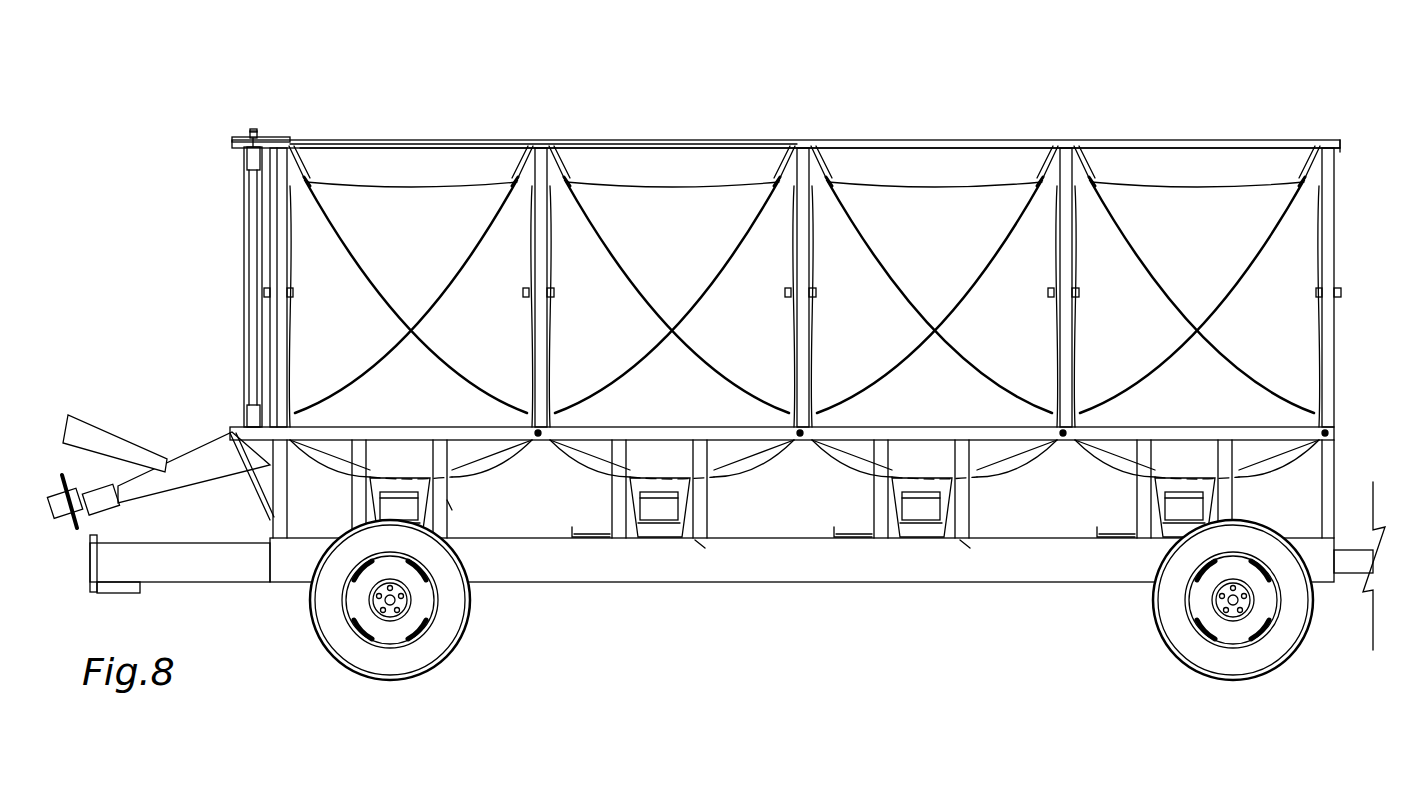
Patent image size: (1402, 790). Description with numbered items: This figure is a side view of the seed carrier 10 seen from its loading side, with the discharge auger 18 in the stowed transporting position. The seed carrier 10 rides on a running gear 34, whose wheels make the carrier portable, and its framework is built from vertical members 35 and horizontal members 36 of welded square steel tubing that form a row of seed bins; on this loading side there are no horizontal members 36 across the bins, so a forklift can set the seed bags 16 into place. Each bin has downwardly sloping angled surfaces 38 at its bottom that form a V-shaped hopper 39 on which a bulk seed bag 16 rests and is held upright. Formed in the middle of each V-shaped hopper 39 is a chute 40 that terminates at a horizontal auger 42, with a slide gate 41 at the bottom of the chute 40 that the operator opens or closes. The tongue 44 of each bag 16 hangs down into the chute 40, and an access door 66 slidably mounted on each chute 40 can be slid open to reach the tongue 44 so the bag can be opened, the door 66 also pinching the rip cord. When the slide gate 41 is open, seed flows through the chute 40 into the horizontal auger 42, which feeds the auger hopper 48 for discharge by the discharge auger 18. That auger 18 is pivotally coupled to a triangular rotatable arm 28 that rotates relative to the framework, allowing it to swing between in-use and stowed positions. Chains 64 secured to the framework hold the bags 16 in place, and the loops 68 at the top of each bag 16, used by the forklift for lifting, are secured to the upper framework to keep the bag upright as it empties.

The seed carrier 10 is at (612, 90).
The seed bag 16 is at (258, 130).
The discharge auger 18 is at (212, 445).
The rotatable arm 28 is at (244, 277).
The running gear 34 is at (356, 660).
The vertical members 35 is at (282, 327).
The horizontal members 36 is at (453, 147).
The angled surfaces 38 is at (313, 450).
The V-shaped hopper 39 is at (392, 112).
The chute 40 is at (630, 522).
The slide gate 41 is at (580, 538).
The horizontal auger 42 is at (213, 550).
The tongue 44 is at (452, 505).
The auger hopper 48 is at (118, 433).
The chains 64 is at (449, 293).
The access doors 66 is at (385, 508).
The loops 68 is at (306, 180).